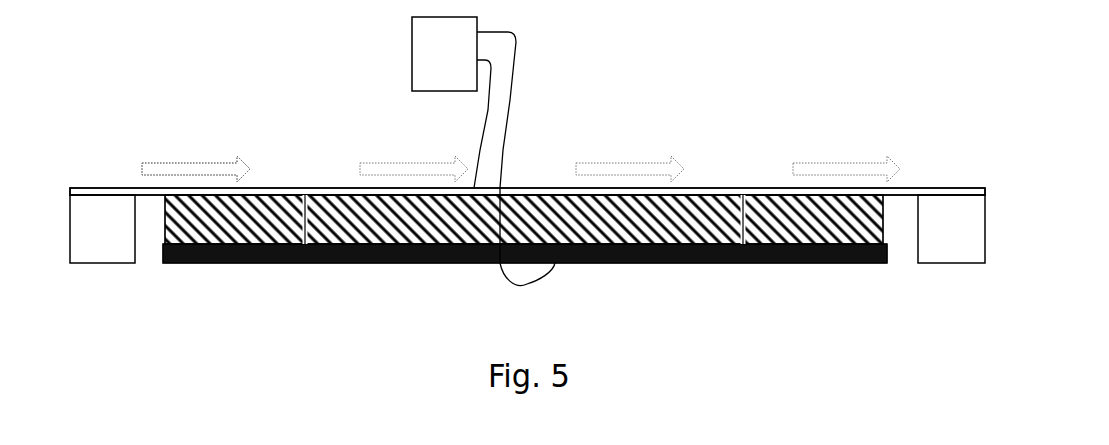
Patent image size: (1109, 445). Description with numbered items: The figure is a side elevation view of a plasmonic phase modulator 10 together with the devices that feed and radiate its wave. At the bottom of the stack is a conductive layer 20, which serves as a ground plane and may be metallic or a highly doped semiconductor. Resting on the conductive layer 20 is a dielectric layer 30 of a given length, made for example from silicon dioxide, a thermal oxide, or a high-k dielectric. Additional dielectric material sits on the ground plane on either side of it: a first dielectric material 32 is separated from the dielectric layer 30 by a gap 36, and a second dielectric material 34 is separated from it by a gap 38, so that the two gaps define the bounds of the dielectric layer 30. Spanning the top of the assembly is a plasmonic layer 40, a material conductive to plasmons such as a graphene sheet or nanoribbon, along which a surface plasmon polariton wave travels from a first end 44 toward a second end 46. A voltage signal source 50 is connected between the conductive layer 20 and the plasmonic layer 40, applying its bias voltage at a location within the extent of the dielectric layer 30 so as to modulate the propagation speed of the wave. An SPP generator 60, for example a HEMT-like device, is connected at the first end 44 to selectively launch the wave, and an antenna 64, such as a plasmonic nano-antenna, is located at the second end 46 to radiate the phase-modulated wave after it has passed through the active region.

The plasmonic phase modulator 10 is at (150, 27).
The conductive layer 20 is at (613, 263).
The dielectric layer 30 is at (400, 263).
The first dielectric material 32 is at (206, 232).
The second dielectric material 34 is at (833, 228).
The gap 36 is at (305, 237).
The gap 38 is at (740, 228).
The plasmonic layer 40 is at (532, 188).
The first end 44 is at (232, 135).
The second end 46 is at (768, 149).
The voltage signal source 50 is at (483, 151).
The SPP generator 60 is at (102, 229).
The antenna 64 is at (951, 229).